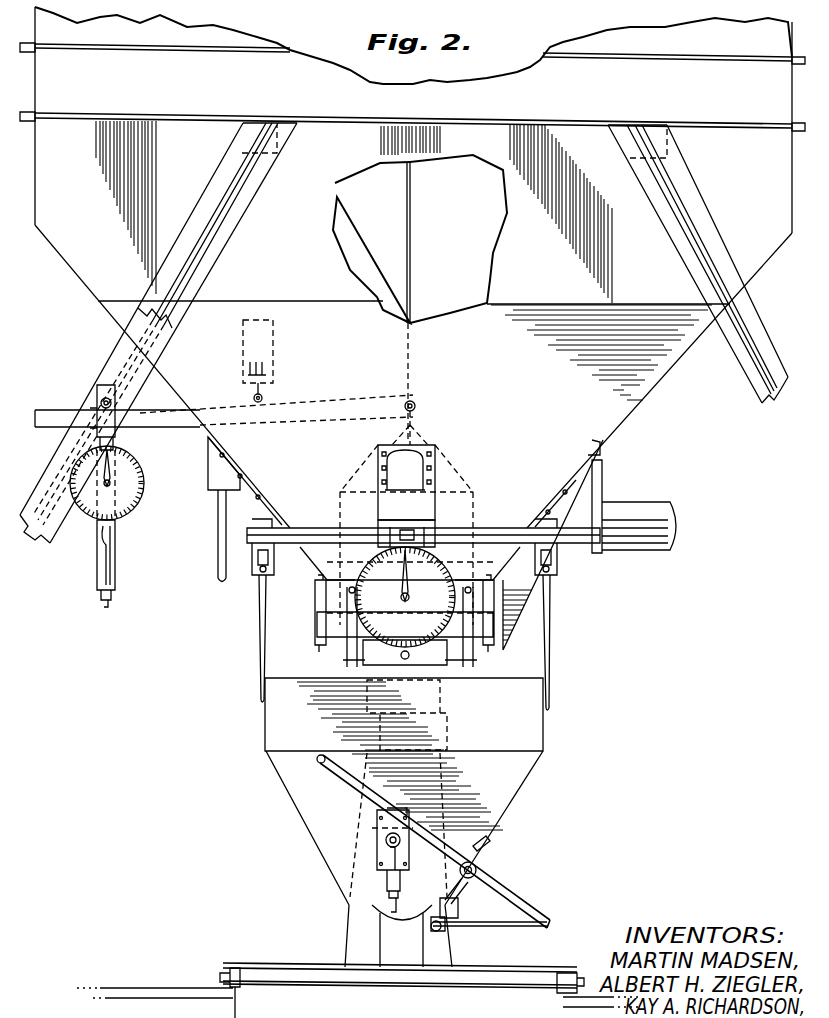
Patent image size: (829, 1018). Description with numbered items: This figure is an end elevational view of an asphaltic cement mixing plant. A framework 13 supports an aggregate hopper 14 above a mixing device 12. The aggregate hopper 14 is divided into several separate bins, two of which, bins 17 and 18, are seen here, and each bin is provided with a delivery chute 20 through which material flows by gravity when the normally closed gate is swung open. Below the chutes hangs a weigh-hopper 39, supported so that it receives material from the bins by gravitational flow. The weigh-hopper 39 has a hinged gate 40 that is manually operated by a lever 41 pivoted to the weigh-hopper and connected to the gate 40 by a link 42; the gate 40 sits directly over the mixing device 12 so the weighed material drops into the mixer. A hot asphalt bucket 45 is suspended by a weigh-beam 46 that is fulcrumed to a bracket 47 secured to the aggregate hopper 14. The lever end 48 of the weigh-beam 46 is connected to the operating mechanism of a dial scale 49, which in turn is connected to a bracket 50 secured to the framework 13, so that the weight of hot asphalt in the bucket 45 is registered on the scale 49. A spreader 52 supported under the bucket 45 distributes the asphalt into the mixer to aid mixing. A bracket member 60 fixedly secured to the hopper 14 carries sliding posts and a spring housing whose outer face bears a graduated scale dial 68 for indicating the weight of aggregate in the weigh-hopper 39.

The mixing device 12 is at (277, 1005).
The framework 13 is at (213, 201).
The aggregate hopper 14 is at (100, 270).
The bin 17 is at (384, 219).
The bin 18 is at (467, 219).
The delivery chute 20 is at (330, 603).
The weigh-hopper 39 is at (278, 741).
The hinged gate 40 is at (388, 912).
The lever 41 is at (481, 884).
The link 42 is at (503, 932).
The hot asphalt bucket 45 is at (466, 521).
The weigh-beam 46 is at (178, 429).
The bracket 47 is at (270, 349).
The lever end 48 is at (55, 410).
The dial scale 49 is at (141, 512).
The bracket 50 is at (117, 588).
The spreader 52 is at (560, 595).
The bracket member 60 is at (438, 457).
The scale dial 68 is at (348, 650).